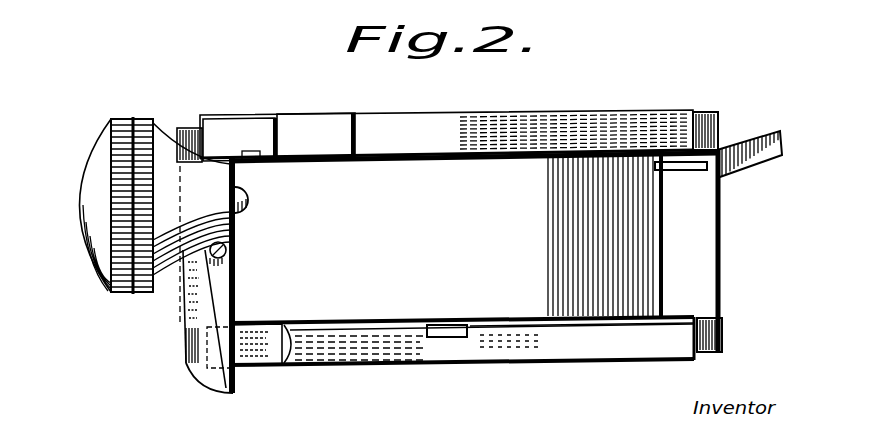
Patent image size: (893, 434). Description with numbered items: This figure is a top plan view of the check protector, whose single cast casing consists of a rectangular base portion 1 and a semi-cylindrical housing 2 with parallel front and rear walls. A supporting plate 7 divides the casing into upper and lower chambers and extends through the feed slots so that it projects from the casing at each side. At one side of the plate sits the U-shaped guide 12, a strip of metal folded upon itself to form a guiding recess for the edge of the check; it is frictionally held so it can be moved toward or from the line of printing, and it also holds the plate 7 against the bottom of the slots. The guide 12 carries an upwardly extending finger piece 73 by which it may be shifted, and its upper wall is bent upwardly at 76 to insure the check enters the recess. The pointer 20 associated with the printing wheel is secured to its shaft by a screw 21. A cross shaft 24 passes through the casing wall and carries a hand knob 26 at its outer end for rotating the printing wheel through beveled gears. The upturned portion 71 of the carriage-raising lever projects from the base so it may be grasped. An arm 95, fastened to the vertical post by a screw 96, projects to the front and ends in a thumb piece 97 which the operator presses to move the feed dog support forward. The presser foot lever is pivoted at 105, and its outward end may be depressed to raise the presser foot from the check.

The rectangular base portion 1 is at (720, 249).
The semi-cylindrical housing 2 is at (437, 258).
The supporting plate 7 is at (435, 136).
The U-shaped guide 12 is at (290, 355).
The pointer 20 is at (525, 323).
The screw 21 is at (457, 338).
The cross shaft 24 is at (244, 198).
The hand knob 26 is at (150, 100).
The upturned portion 71 is at (753, 134).
The finger piece 73 is at (273, 136).
The upwardly bent upper wall 76 is at (320, 157).
The arm 95 is at (213, 310).
The screw 96 is at (232, 253).
The thumb piece 97 is at (220, 383).
The pivot 105 is at (678, 163).